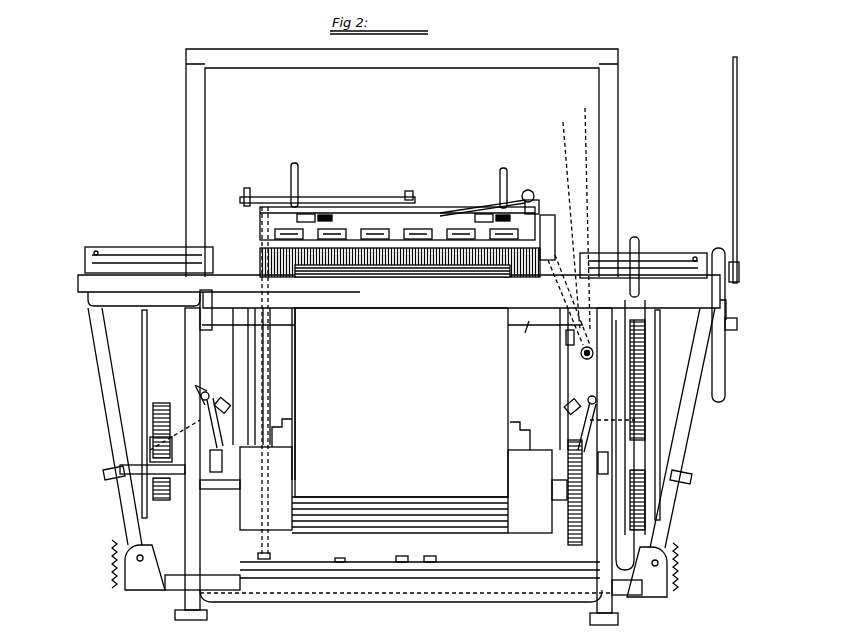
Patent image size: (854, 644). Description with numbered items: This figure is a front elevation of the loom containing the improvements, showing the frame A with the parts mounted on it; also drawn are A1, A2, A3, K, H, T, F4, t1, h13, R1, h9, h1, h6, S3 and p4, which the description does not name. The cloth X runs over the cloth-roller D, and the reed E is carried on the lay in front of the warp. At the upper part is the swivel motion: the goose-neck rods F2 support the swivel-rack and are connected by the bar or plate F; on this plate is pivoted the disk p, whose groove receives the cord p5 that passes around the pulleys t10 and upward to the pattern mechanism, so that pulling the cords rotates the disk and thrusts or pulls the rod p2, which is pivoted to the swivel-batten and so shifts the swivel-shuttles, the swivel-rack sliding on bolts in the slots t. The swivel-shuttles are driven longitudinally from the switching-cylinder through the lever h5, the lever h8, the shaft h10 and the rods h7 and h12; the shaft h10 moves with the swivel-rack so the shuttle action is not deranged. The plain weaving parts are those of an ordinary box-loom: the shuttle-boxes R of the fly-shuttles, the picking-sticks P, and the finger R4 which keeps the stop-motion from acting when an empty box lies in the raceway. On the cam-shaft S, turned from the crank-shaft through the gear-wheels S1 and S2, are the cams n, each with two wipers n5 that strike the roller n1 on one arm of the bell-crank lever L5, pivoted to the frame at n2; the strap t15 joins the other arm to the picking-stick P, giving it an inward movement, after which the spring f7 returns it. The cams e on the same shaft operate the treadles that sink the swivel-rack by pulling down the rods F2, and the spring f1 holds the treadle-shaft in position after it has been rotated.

The frame A is at (205, 151).
The handle A1 is at (725, 374).
The handle bracket A2 is at (726, 306).
The rod A3 is at (737, 174).
The shuttle-boxes R is at (150, 247).
The rod R1 is at (147, 378).
The finger R4 is at (213, 245).
The post K is at (640, 245).
The reed H is at (260, 252).
The bar or plate F is at (548, 216).
The gooseneck rods F2 is at (298, 166).
The bar F4 is at (455, 212).
The slots t is at (418, 219).
The slide block t1 is at (388, 217).
The rod h12 is at (340, 197).
The stud h13 is at (412, 192).
The lever h8 is at (247, 190).
The disk p is at (533, 193).
The reed E is at (545, 245).
The cord p4 is at (560, 125).
The cord p5 is at (575, 112).
The gear-wheel S2 is at (570, 323).
The pulleys t10 is at (576, 355).
The bracket S3 is at (522, 338).
The picking-sticks P is at (110, 420).
The strap t15 is at (112, 478).
The bar T is at (233, 350).
The shaft h10 is at (268, 354).
The cloth X is at (400, 420).
The cloth-roller D is at (396, 490).
The cams e is at (399, 434).
The bell-crank lever L5 is at (195, 385).
The pivot n2 is at (205, 392).
The roller n1 is at (221, 400).
The cam-shaft S is at (215, 423).
The gear-wheel S1 is at (645, 418).
The rod p2 is at (630, 390).
The cams n is at (225, 428).
The wipers n5 is at (408, 460).
The rail h9 is at (255, 575).
The rod h7 is at (530, 590).
The stud h1 is at (340, 562).
The stud h6 is at (400, 560).
The lever h5 is at (430, 560).
The spring f7 is at (108, 553).
The spring f1 is at (680, 560).